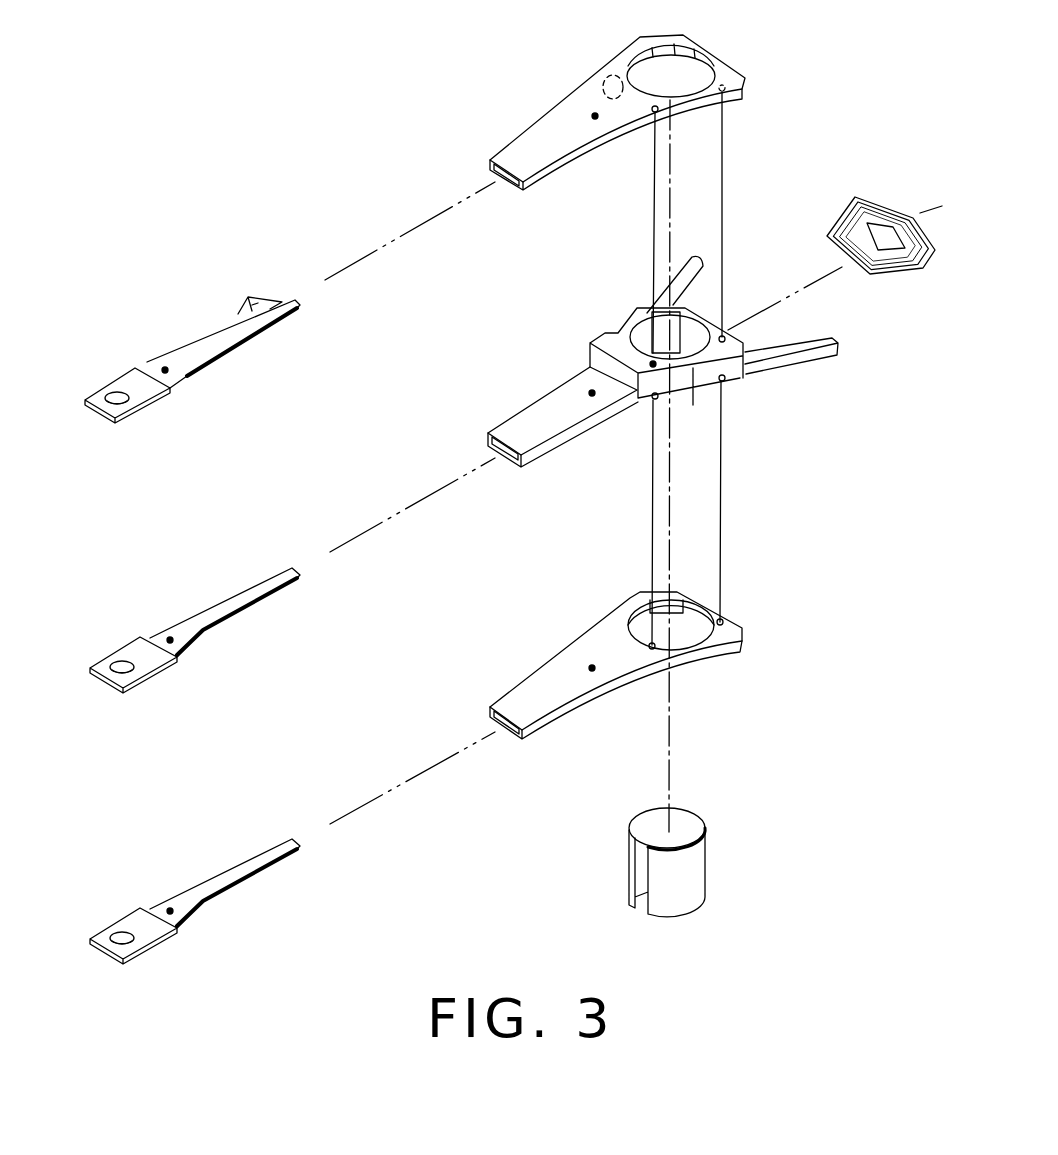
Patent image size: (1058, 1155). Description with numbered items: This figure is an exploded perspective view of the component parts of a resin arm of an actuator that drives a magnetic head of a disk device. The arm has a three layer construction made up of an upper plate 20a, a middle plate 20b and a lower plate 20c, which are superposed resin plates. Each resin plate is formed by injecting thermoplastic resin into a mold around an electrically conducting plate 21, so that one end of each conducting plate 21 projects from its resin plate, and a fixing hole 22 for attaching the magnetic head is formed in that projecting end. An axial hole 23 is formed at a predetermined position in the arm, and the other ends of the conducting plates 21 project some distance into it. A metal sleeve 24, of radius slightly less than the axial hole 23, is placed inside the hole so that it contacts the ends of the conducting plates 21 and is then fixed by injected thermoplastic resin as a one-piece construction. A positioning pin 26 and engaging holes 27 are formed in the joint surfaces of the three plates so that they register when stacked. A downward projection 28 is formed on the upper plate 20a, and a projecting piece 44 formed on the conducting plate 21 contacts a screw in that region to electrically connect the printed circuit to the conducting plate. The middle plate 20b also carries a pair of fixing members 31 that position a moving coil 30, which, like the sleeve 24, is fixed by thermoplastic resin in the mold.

The upper plate 20a is at (507, 142).
The middle plate 20b is at (510, 412).
The lower plate 20c is at (508, 688).
The electrically conducting plate 21 is at (228, 323).
The fixing hole 22 is at (125, 405).
The axial hole 23 is at (693, 77).
The sleeve 24 is at (707, 870).
The positioning pin 26 is at (745, 94).
The engaging hole 27 is at (725, 336).
The projection 28 is at (607, 78).
The moving coil 30 is at (862, 192).
The fixing member 31 is at (815, 358).
The projecting piece 44 is at (250, 297).